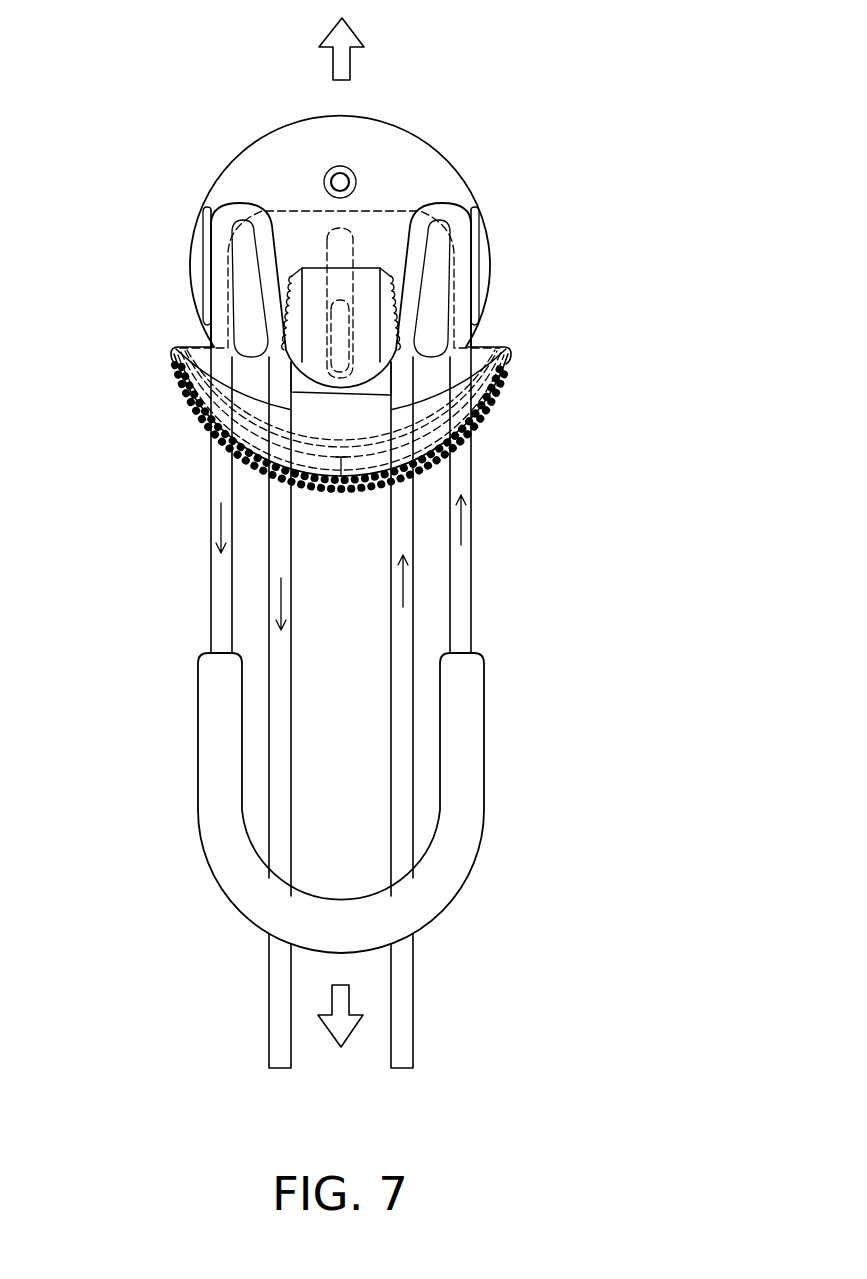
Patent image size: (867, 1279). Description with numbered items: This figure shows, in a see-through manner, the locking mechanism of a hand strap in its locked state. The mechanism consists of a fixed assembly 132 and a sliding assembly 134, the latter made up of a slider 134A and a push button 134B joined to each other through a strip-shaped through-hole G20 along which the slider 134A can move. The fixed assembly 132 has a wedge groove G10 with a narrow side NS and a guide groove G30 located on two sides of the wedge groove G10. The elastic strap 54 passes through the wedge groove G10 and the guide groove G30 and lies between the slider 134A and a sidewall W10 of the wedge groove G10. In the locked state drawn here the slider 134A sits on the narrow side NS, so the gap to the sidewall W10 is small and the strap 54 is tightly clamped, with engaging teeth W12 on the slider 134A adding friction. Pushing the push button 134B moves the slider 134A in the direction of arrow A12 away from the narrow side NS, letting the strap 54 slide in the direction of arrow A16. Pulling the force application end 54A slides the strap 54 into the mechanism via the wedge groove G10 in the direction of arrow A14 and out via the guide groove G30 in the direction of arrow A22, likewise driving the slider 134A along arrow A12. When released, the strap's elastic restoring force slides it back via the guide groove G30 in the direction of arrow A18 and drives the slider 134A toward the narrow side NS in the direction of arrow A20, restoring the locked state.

The fixed assembly 132 is at (243, 176).
The sliding assembly 134 is at (610, 355).
The slider 134A is at (363, 370).
The push button 134B is at (513, 358).
The elastic strap 54 is at (280, 985).
The force application end 54A is at (462, 746).
The wedge groove G10 is at (305, 252).
The strip-shaped through-hole G20 is at (358, 331).
The guide groove G30 is at (229, 239).
The sidewall of the wedge groove W10 is at (245, 305).
The engaging teeth W12 is at (402, 282).
The narrow side NS is at (296, 332).
The arrow A12 is at (350, 62).
The arrow A14 is at (403, 586).
The arrow A16 is at (280, 598).
The arrow A18 is at (462, 524).
The arrow A20 is at (350, 998).
The arrow A22 is at (218, 521).